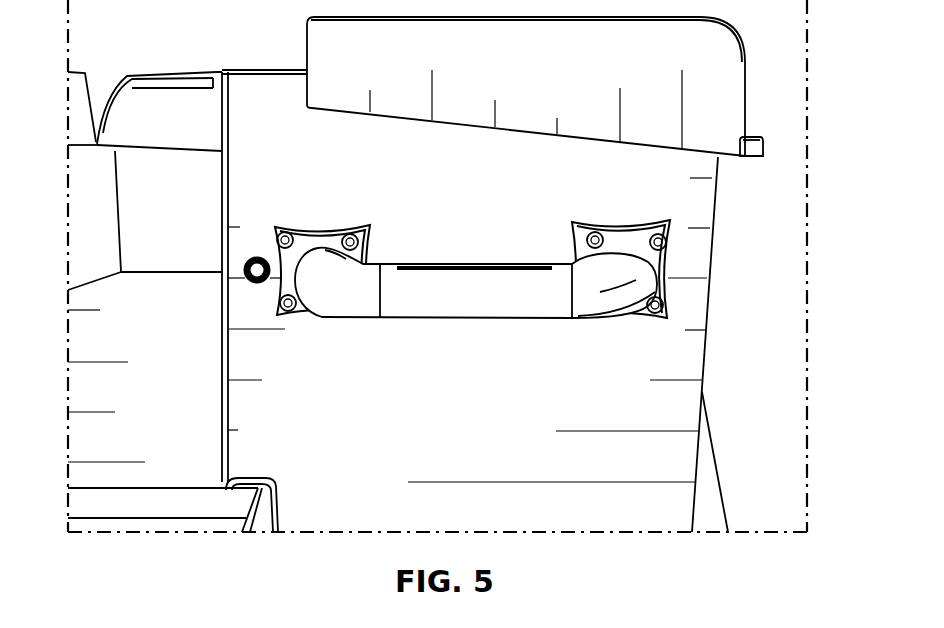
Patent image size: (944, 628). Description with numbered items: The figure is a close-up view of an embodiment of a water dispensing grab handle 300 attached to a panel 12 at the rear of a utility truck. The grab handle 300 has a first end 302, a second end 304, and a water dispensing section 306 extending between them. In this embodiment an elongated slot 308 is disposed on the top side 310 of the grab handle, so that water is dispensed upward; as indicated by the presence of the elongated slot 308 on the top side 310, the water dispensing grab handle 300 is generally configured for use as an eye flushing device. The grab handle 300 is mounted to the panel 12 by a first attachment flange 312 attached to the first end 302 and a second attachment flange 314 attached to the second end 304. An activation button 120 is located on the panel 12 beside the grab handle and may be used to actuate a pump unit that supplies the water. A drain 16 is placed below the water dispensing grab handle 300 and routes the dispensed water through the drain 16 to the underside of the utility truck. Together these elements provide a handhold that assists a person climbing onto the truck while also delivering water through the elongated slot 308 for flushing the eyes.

The panel 12 is at (428, 432).
The drain 16 is at (708, 504).
The activation button 120 is at (258, 256).
The water dispensing grab handle 300 is at (688, 294).
The first end 302 is at (322, 242).
The second end 304 is at (627, 305).
The water dispensing section 306 is at (507, 292).
The elongated slot 308 is at (503, 266).
The top side 310 is at (392, 262).
The first attachment flange 312 is at (292, 310).
The second attachment flange 314 is at (625, 233).